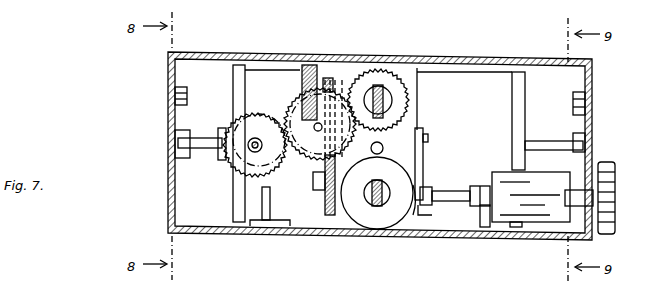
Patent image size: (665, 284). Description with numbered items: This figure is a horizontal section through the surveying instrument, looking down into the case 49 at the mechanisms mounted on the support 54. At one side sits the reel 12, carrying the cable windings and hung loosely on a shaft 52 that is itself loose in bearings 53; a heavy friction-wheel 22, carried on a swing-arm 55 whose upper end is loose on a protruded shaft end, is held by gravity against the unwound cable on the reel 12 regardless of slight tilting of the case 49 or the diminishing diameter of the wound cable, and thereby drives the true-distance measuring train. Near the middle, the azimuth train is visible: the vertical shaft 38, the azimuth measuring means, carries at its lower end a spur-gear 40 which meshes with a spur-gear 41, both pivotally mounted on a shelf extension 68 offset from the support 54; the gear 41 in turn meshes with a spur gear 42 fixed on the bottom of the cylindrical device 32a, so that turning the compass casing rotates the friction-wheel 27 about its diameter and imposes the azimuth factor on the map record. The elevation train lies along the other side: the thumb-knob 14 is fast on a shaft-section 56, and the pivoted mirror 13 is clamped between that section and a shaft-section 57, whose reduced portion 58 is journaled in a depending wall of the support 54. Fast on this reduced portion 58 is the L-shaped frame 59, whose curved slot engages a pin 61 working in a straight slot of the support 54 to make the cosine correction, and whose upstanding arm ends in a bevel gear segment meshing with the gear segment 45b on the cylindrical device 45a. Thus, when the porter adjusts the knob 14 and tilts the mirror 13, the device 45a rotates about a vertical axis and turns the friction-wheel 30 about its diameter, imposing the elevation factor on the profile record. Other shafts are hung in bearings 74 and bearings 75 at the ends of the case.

The reel 12 is at (379, 143).
The pivoted mirror 13 is at (541, 215).
The thumb-knob 14 is at (616, 178).
The friction-wheel 22 is at (328, 78).
The friction-wheel 27 is at (396, 80).
The friction-wheel 30 is at (378, 206).
The cylindrical device 32a is at (365, 92).
The vertical shaft 38 is at (252, 142).
The spur-gear 40 is at (234, 164).
The spur-gear 41 is at (313, 80).
The spur gear 42 is at (378, 86).
The cylindrical device 45a is at (368, 200).
The gear segment 45b is at (411, 196).
The case 49 is at (215, 53).
The shaft 52 is at (562, 141).
The bearings 53 is at (176, 133).
The support 54 is at (423, 131).
The swing-arm 55 is at (336, 205).
The shaft-section 56 is at (590, 195).
The shaft-section 57 is at (480, 186).
The reduced portion 58 is at (450, 192).
The L-shaped frame 59 is at (424, 166).
The pin 61 is at (428, 137).
The shelf extension 68 is at (300, 113).
The bearings 74 is at (175, 90).
The bearings 75 is at (266, 222).